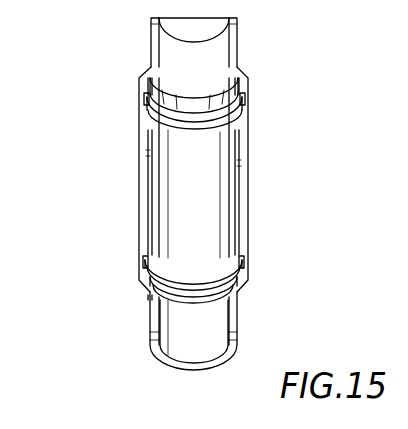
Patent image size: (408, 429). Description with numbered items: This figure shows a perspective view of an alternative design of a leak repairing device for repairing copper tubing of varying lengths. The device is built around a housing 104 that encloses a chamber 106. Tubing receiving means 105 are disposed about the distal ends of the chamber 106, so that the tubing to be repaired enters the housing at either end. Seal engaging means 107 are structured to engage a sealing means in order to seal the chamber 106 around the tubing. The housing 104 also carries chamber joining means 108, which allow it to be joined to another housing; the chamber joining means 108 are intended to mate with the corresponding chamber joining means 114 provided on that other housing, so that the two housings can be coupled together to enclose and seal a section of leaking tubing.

The housing 104 is at (108, 282).
The tubing receiving means 105 is at (172, 47).
The chamber 106 is at (222, 202).
The seal engaging means 107 is at (232, 139).
The chamber joining means 108 is at (146, 126).
The chamber joining means 114 is at (145, 163).